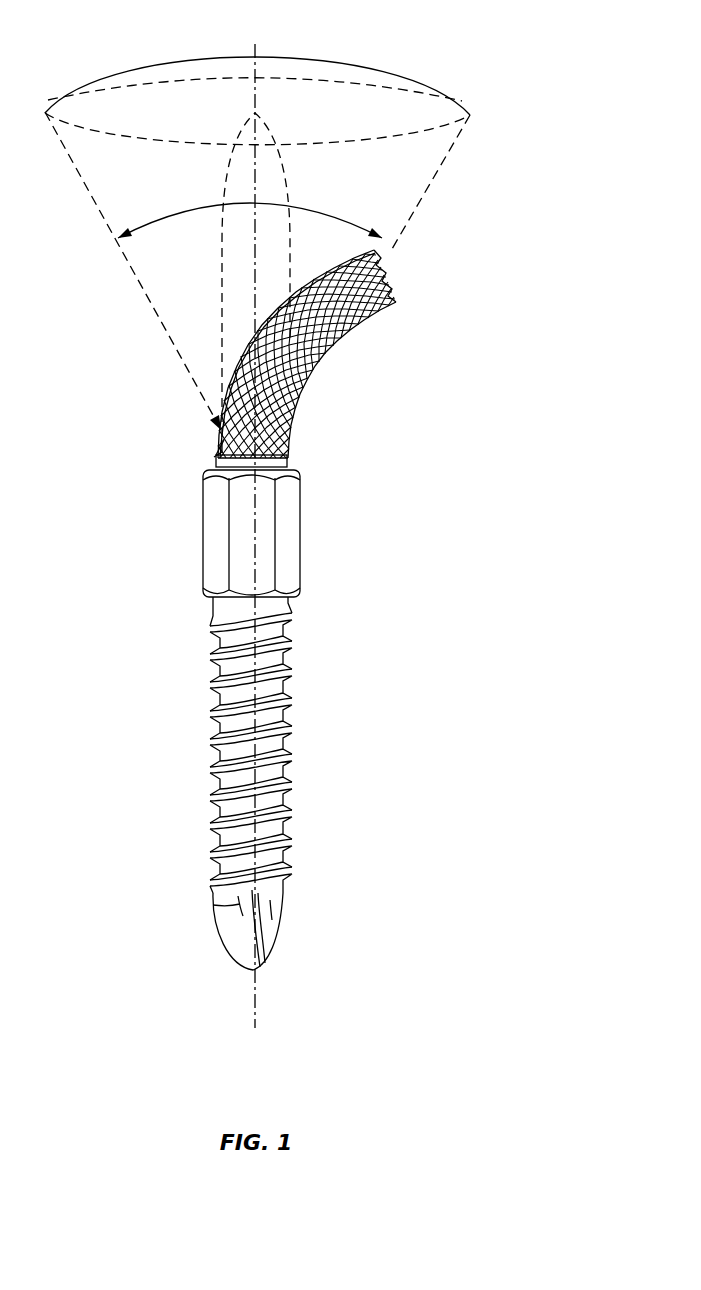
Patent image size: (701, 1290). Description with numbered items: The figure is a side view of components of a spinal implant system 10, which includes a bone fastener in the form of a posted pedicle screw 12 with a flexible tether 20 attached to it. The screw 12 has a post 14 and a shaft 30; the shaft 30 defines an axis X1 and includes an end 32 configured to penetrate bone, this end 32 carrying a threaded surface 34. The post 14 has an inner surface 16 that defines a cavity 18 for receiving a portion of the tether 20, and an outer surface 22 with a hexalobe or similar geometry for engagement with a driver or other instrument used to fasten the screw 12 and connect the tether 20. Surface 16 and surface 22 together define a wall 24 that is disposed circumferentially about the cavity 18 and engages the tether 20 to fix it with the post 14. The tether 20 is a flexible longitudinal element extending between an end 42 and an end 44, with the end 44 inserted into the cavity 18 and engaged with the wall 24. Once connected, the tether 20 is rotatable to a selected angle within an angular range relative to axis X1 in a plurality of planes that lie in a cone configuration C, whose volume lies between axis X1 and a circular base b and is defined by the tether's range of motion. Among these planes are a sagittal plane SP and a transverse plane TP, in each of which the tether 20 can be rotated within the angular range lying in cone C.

The spinal implant system 10 is at (567, 349).
The posted pedicle screw 12 is at (315, 720).
The post 14 is at (300, 538).
The surface 16 is at (217, 455).
The cavity 18 is at (219, 437).
The tether 20 is at (302, 398).
The outer surface 22 is at (392, 305).
The wall 24 is at (290, 460).
The shaft 30 is at (242, 745).
The end 32 is at (213, 906).
The threaded surface 34 is at (277, 792).
The end 42 is at (377, 262).
The end 44 is at (288, 430).
The axis X1 is at (251, 42).
The transverse plane TP is at (163, 63).
The sagittal plane SP is at (273, 133).
The circular base b is at (282, 76).
The cone configuration C is at (450, 162).